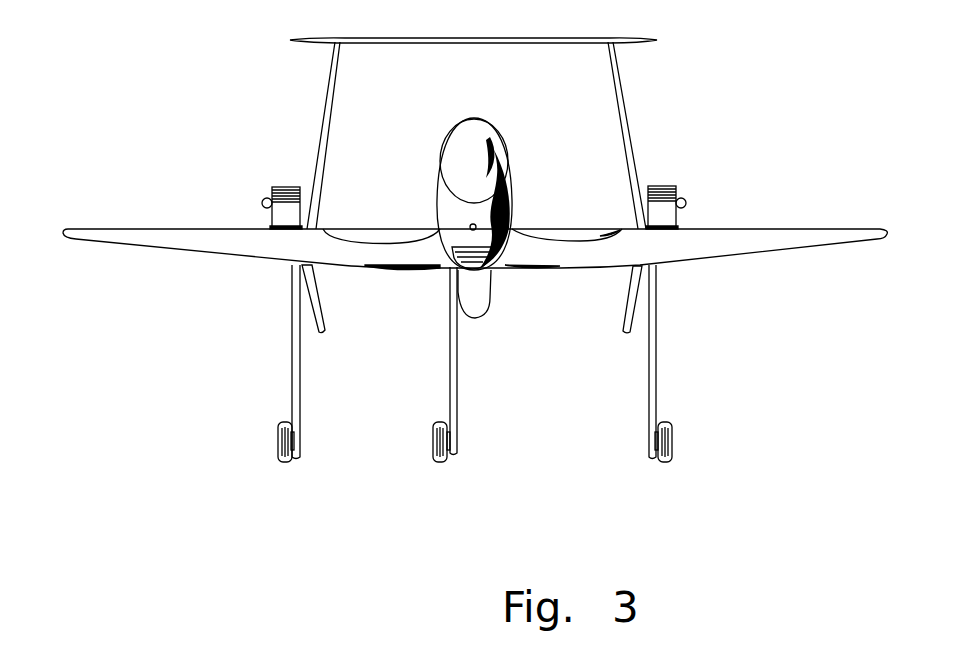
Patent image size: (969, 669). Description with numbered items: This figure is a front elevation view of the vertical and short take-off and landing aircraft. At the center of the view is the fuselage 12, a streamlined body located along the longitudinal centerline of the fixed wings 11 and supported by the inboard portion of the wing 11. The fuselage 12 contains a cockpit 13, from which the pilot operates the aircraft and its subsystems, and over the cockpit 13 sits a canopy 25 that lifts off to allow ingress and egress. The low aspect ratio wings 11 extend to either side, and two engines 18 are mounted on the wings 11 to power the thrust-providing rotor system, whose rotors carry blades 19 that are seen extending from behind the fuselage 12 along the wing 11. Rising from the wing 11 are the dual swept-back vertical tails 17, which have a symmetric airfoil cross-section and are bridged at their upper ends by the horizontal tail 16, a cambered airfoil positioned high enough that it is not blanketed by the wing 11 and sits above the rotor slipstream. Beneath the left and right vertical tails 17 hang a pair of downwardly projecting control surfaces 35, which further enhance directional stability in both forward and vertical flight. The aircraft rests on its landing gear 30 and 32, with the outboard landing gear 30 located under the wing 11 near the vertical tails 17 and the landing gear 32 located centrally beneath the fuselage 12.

The fixed wings 11 is at (185, 240).
The fuselage 12 is at (512, 190).
The cockpit 13 is at (468, 150).
The horizontal tail 16 is at (523, 40).
The vertical tails 17 is at (320, 128).
The engines 18 is at (273, 187).
The blades 19 is at (380, 227).
The canopy 25 is at (497, 131).
The landing gear 30 is at (302, 393).
The landing gear 32 is at (458, 390).
The downwardly projecting control surfaces 35 is at (310, 300).